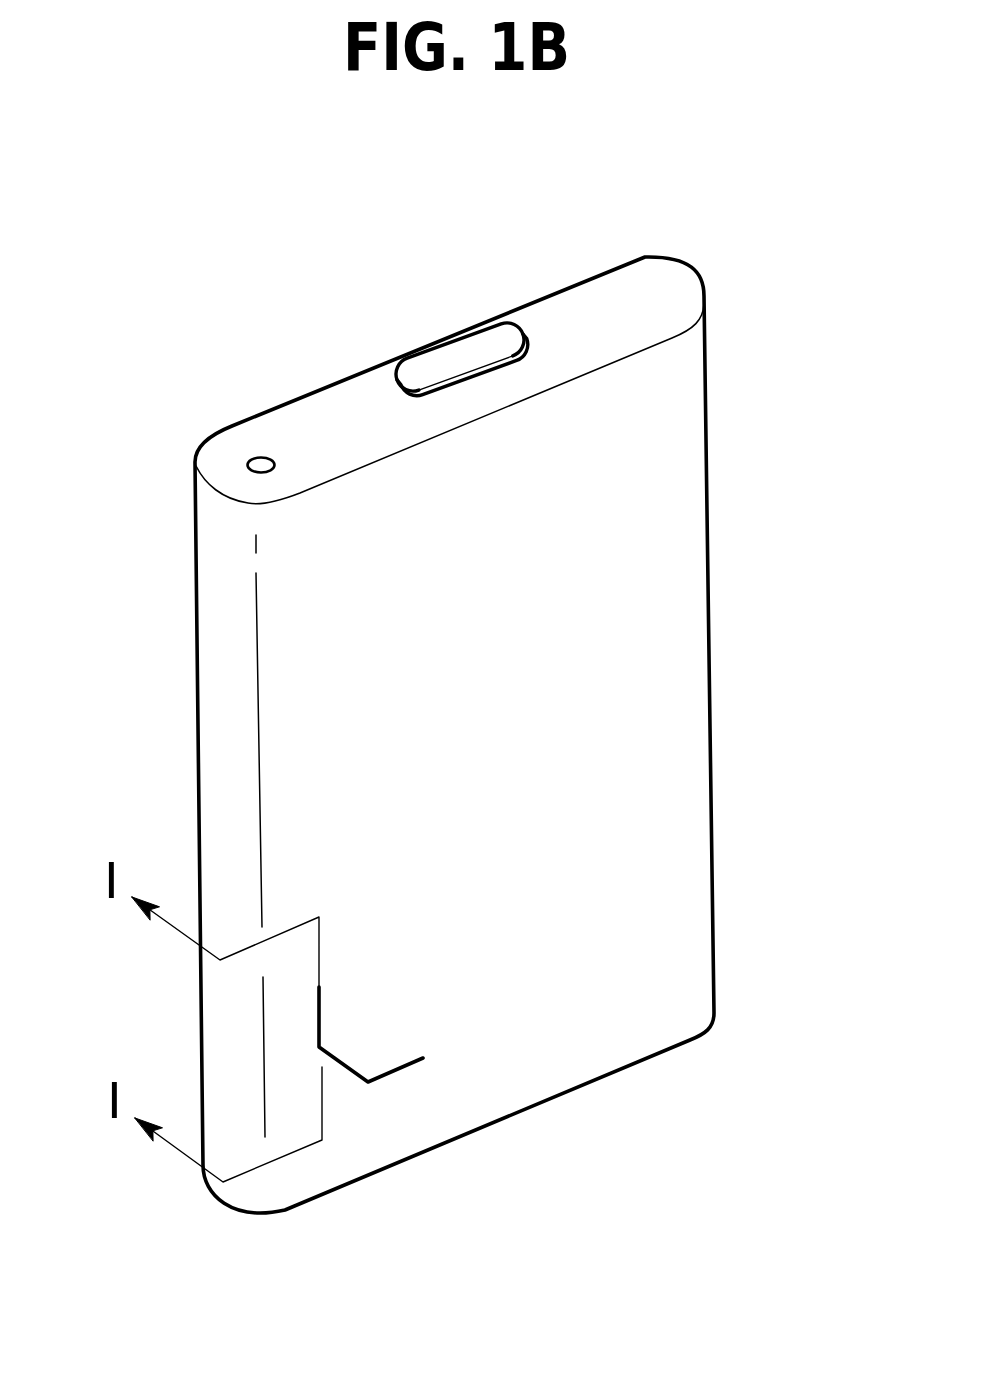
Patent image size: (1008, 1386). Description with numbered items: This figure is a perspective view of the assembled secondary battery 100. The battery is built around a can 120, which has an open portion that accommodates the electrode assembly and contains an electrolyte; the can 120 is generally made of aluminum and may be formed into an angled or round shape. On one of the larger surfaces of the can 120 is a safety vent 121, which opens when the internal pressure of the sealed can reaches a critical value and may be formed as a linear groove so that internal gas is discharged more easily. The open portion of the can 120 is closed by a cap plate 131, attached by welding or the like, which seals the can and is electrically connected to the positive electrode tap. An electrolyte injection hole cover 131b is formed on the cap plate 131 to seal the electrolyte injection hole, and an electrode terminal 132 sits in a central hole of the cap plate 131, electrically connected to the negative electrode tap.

The secondary battery 100 is at (189, 216).
The can 120 is at (667, 510).
The safety vent 121 is at (355, 1078).
The cap plate 131 is at (656, 278).
The electrolyte injection hole cover 131b is at (257, 458).
The electrode terminal 132 is at (457, 360).